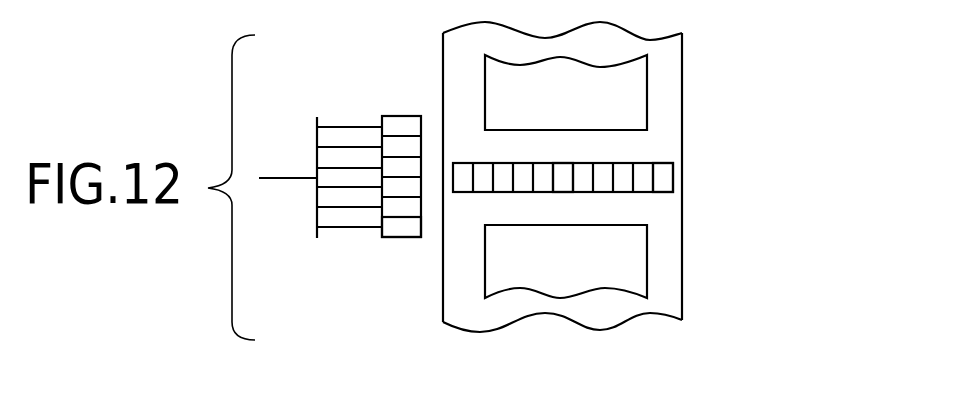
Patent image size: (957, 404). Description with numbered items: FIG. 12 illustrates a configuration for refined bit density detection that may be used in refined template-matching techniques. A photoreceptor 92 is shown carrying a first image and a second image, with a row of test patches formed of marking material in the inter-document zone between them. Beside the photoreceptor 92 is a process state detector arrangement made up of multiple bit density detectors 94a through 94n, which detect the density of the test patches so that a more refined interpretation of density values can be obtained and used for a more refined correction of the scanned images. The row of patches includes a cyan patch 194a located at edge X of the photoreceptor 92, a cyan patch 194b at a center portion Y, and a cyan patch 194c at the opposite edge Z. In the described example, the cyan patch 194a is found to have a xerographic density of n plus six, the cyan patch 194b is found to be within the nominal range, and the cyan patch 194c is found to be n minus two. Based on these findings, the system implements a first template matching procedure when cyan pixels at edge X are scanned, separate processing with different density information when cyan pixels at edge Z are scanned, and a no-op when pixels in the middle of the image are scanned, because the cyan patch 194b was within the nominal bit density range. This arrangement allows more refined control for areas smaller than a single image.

The photoreceptor 92 is at (450, 68).
The bit density detector 94a is at (403, 124).
The bit density detector 94n is at (393, 227).
The cyan patch 194a is at (467, 192).
The cyan patch 194b is at (563, 182).
The cyan patch 194c is at (665, 172).
The edge of photoreceptor X is at (443, 283).
The center portion of photoreceptor Y is at (593, 205).
The edge of photoreceptor Z is at (683, 283).